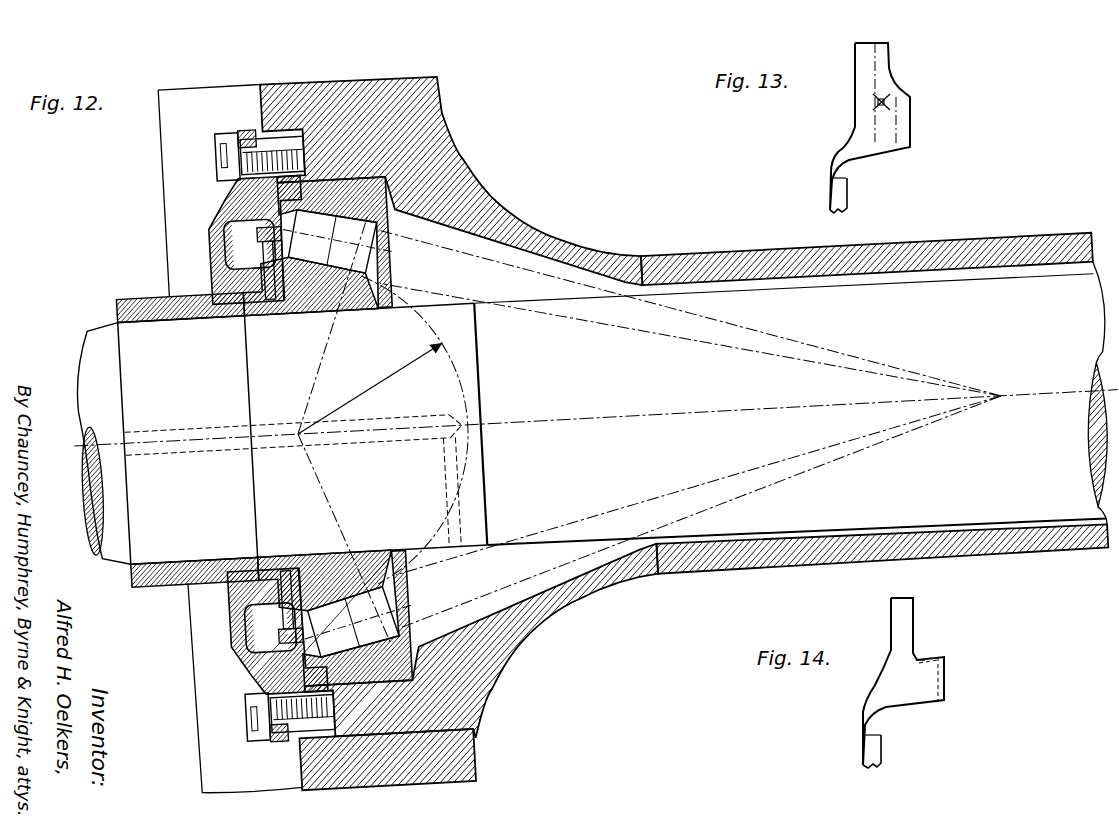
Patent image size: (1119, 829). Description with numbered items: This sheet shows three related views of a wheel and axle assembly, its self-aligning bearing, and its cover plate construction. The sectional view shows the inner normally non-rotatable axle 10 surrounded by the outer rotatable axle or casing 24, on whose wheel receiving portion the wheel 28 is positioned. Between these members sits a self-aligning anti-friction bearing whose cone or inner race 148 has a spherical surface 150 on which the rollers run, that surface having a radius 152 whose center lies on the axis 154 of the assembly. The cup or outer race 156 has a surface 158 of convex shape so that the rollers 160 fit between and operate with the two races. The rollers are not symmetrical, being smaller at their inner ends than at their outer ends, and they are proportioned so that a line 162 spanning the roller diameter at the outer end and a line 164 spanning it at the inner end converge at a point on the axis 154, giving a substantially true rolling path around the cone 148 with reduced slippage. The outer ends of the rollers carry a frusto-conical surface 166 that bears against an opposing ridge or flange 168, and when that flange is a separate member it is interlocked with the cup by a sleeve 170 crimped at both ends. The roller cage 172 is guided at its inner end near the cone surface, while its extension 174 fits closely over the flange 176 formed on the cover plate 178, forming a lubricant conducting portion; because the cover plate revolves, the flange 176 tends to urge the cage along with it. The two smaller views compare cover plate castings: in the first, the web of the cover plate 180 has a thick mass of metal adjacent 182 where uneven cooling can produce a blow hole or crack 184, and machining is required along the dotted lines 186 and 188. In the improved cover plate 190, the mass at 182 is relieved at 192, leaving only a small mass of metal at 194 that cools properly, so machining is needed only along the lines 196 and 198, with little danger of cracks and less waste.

In FIG. 12, the inner normally non-rotatable axle 10 is at (756, 520).
In FIG. 12, the outer rotatable axle or casing 24 is at (547, 622).
In FIG. 12, the wheel 28 is at (476, 752).
In FIG. 12, the cone or inner race 148 is at (363, 550).
In FIG. 12, the spherical surface 150 is at (455, 569).
In FIG. 12, the radius 152 is at (368, 392).
In FIG. 12, the axis 154 is at (273, 440).
In FIG. 12, the cup or outer race 156 is at (414, 616).
In FIG. 12, the surface 158 is at (418, 600).
In FIG. 12, the rollers 160 is at (322, 666).
In FIG. 12, the line 162 is at (543, 252).
In FIG. 12, the line 164 is at (543, 304).
In FIG. 12, the frusto-conical surface 166 is at (302, 660).
In FIG. 12, the ridge or flange 168 is at (398, 258).
In FIG. 12, the sleeve 170 is at (351, 753).
In FIG. 12, the roller cage 172 is at (290, 630).
In FIG. 12, the extension 174 is at (312, 650).
In FIG. 12, the flange 176 is at (286, 617).
In FIG. 12, the cover plate 178 is at (330, 641).
In FIG. 13, the cover plate 180 is at (840, 190).
In FIG. 13, the thick metal region 182 is at (870, 130).
In FIG. 13, the blow hole or crack 184 is at (884, 106).
In FIG. 13, the dotted line 186 is at (878, 52).
In FIG. 13, the dotted line 188 is at (888, 100).
In FIG. 14, the cover plate 190 is at (878, 751).
In FIG. 14, the relief 192 is at (917, 655).
In FIG. 14, the small metal mass 194 is at (911, 672).
In FIG. 14, the machining line 196 is at (931, 658).
In FIG. 14, the machining line 198 is at (945, 671).